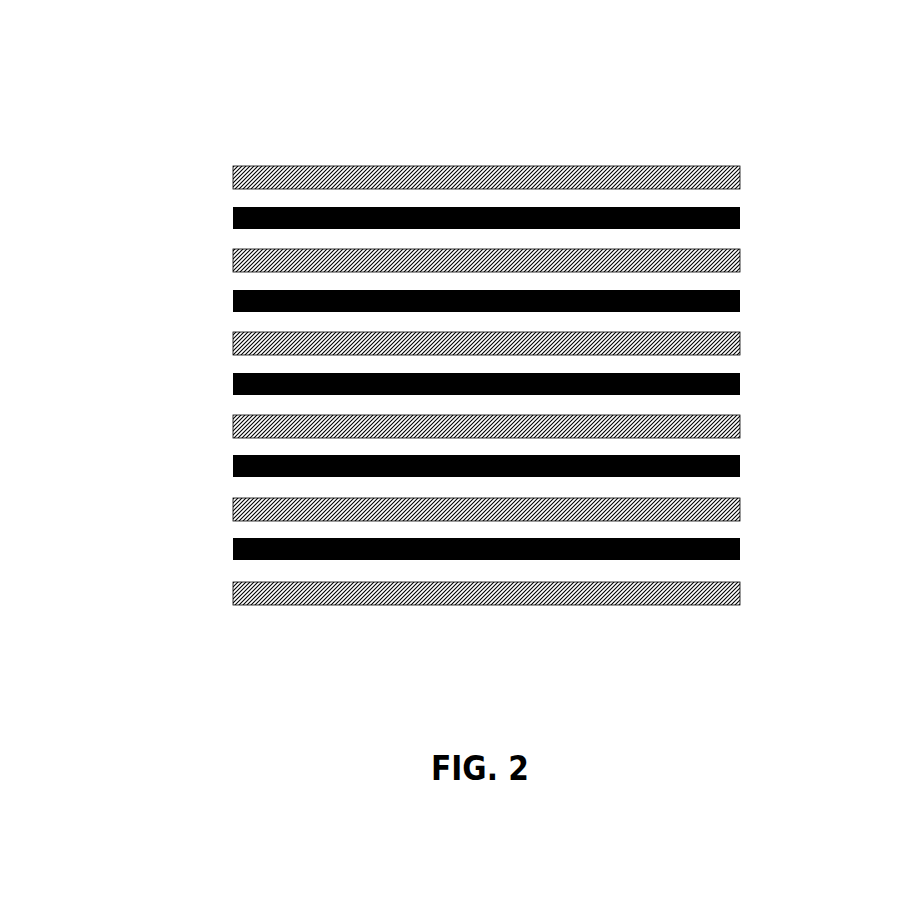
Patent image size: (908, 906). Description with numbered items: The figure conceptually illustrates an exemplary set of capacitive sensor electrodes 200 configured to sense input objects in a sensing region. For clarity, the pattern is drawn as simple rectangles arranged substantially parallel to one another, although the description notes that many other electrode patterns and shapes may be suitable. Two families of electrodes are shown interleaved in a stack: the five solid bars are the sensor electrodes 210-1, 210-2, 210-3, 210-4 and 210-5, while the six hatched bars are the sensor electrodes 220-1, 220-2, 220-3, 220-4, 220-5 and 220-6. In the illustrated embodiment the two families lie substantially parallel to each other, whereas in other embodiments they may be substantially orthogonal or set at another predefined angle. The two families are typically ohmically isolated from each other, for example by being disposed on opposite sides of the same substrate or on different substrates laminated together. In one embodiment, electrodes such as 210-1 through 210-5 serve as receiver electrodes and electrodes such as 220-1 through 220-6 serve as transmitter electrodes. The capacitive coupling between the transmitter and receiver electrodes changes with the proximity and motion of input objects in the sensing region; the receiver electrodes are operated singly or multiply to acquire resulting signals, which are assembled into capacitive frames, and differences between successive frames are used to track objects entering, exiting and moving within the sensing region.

The set of capacitive sensor electrodes 200 is at (124, 62).
The sensor electrode 210-1 is at (741, 541).
The sensor electrode 210-2 is at (741, 458).
The sensor electrode 210-3 is at (741, 376).
The sensor electrode 210-4 is at (741, 293).
The sensor electrode 210-5 is at (741, 210).
The sensor electrode 220-1 is at (233, 176).
The sensor electrode 220-2 is at (233, 259).
The sensor electrode 220-3 is at (233, 342).
The sensor electrode 220-4 is at (233, 425).
The sensor electrode 220-5 is at (233, 508).
The sensor electrode 220-6 is at (233, 592).